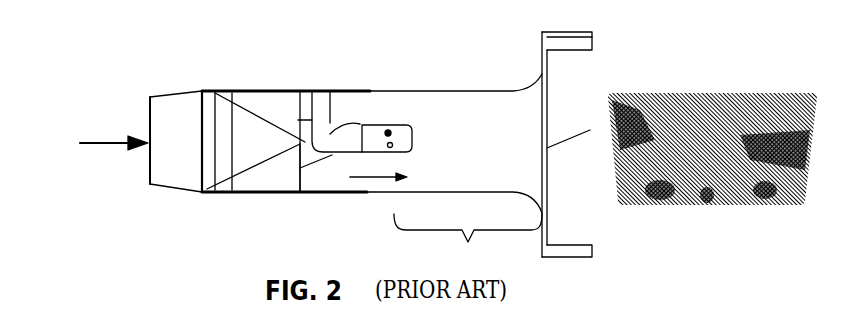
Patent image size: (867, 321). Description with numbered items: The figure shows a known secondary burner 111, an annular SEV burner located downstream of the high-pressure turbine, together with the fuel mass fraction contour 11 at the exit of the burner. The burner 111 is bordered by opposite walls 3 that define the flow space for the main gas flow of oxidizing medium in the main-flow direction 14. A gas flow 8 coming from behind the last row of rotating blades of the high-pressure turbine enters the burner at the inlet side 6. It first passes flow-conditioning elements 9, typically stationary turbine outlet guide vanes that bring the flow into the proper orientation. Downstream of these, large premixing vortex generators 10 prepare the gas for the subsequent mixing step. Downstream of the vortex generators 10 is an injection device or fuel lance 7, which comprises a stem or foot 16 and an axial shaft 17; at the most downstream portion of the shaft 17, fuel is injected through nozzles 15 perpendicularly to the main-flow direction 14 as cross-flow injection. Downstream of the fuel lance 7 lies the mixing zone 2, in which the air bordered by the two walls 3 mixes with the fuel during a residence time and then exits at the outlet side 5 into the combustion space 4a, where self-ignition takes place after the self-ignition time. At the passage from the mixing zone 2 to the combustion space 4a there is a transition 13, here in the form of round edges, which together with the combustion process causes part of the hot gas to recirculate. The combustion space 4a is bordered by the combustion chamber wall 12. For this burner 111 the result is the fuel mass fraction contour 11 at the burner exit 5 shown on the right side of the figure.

The secondary burner 111 is at (172, 67).
The mixing zone 2 is at (468, 241).
The opposite walls 3 is at (438, 90).
The combustion space 4a is at (582, 214).
The outlet side 5 is at (548, 98).
The inlet side 6 is at (150, 120).
The fuel lance 7 is at (389, 130).
The gas flow 8 is at (103, 145).
The flow-conditioning elements 9 is at (176, 143).
The premixing vortex generators 10 is at (278, 175).
The fuel mass fraction contour 11 is at (746, 66).
The combustion chamber wall 12 is at (572, 251).
The transition 13 is at (540, 67).
The main-flow direction 14 is at (367, 178).
The nozzles 15 is at (386, 146).
The stem or foot 16 is at (332, 115).
The axial shaft 17 is at (358, 140).